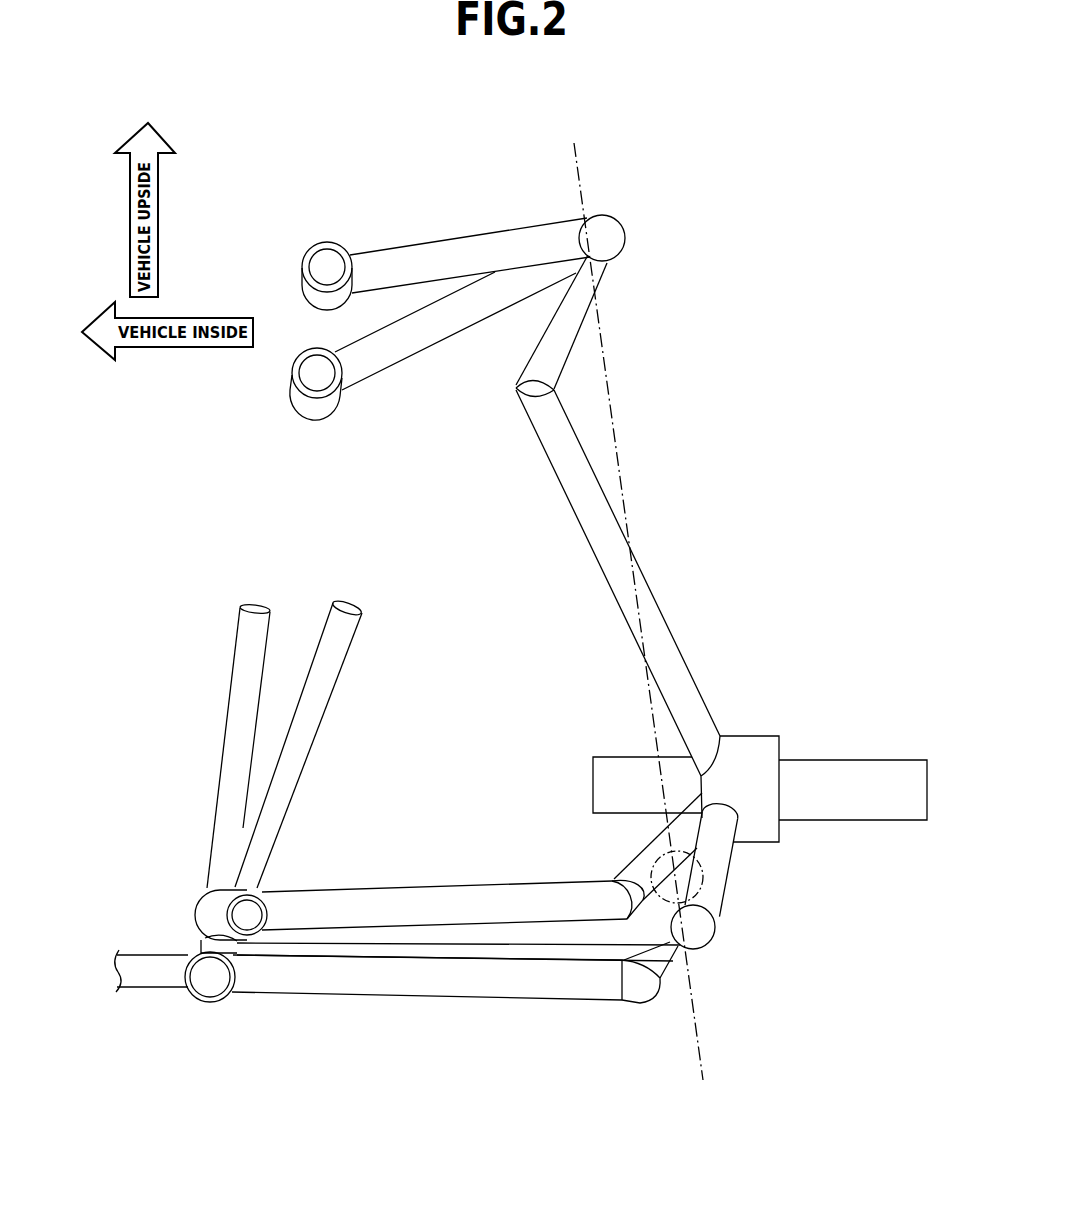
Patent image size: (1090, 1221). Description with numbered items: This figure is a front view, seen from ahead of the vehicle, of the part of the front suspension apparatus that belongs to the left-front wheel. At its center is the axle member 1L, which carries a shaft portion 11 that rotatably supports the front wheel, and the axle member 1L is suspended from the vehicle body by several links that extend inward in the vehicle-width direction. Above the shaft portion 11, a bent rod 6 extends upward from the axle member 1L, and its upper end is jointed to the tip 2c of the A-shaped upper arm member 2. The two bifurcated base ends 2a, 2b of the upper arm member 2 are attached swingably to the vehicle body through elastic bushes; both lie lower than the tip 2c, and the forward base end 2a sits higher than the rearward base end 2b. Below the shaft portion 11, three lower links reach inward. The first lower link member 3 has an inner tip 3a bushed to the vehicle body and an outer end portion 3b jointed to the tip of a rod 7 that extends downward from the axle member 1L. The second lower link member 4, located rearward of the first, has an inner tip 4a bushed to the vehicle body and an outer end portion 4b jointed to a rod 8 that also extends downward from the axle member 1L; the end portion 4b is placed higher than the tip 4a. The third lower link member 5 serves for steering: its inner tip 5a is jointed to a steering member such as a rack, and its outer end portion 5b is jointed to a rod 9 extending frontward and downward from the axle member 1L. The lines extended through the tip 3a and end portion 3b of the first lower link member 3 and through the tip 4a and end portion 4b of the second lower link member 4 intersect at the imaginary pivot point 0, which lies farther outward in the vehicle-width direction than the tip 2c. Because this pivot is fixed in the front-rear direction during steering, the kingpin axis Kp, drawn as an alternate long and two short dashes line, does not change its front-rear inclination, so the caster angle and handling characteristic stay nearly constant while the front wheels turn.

The upper arm member 2 is at (446, 236).
The base end of upper arm member 2a is at (303, 270).
The base end of upper arm member 2b is at (302, 398).
The tip of upper arm member 2c is at (622, 226).
The kingpin axis Kp is at (618, 432).
The bent rod 6 is at (571, 518).
The axle member 1L is at (755, 735).
The shaft portion 11 is at (855, 760).
The rod 7 is at (629, 847).
The first lower link member 3 is at (432, 884).
The tip of first lower link member 3a is at (198, 905).
The end portion of first lower link member 3b is at (605, 877).
The third lower link member 5 is at (545, 947).
The tip of third lower link member 5a is at (205, 948).
The end portion of third lower link member 5b is at (715, 947).
The second lower link member 4 is at (412, 1004).
The tip of second lower link member 4a is at (195, 1000).
The end portion of second lower link member 4b is at (638, 1005).
The rod 8 is at (673, 969).
The rod 9 is at (733, 895).
The imaginary pivot point 0 is at (702, 878).